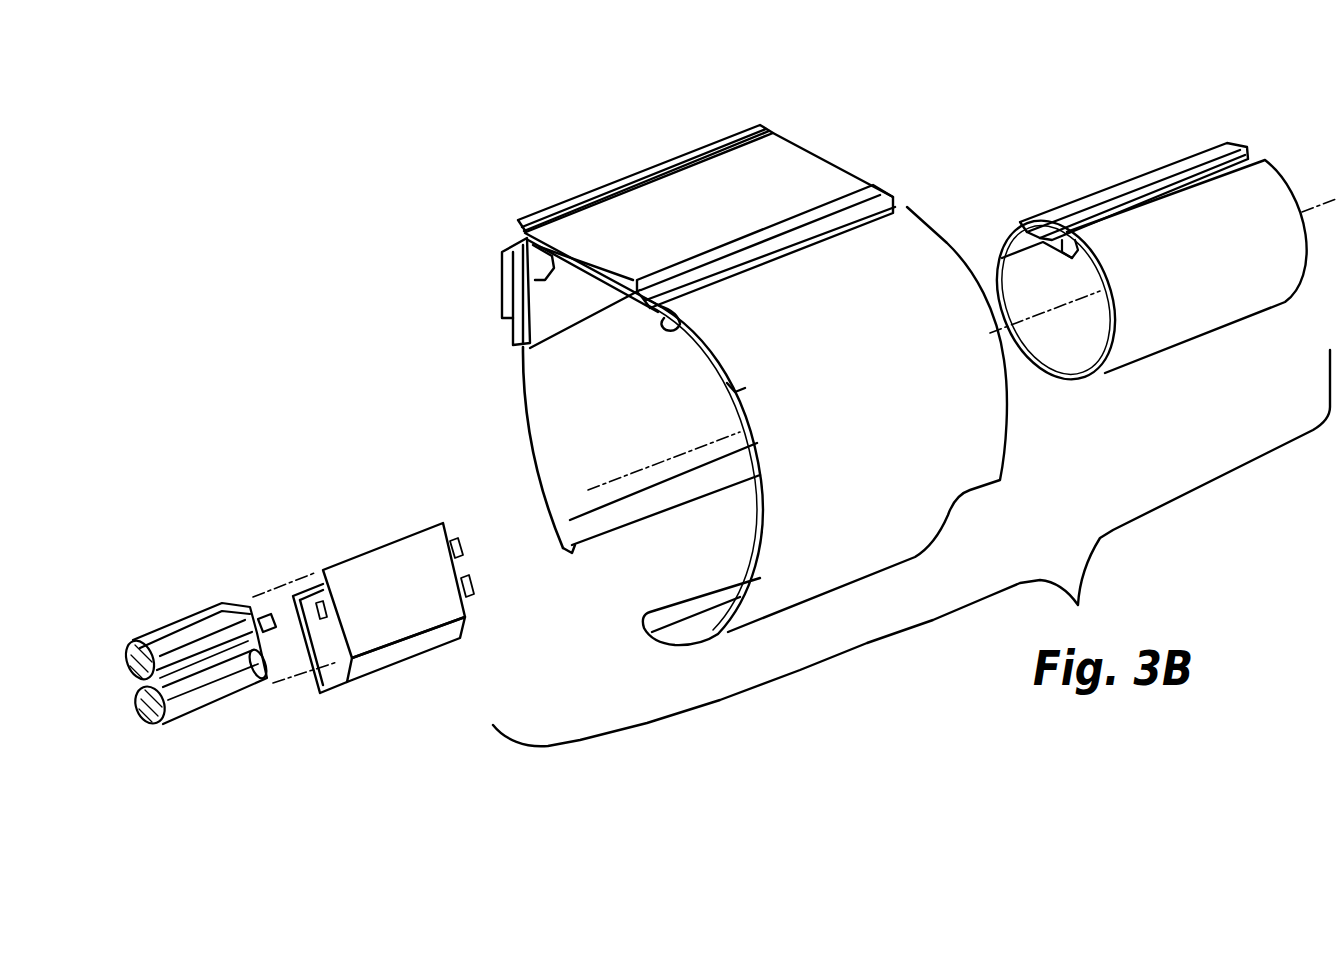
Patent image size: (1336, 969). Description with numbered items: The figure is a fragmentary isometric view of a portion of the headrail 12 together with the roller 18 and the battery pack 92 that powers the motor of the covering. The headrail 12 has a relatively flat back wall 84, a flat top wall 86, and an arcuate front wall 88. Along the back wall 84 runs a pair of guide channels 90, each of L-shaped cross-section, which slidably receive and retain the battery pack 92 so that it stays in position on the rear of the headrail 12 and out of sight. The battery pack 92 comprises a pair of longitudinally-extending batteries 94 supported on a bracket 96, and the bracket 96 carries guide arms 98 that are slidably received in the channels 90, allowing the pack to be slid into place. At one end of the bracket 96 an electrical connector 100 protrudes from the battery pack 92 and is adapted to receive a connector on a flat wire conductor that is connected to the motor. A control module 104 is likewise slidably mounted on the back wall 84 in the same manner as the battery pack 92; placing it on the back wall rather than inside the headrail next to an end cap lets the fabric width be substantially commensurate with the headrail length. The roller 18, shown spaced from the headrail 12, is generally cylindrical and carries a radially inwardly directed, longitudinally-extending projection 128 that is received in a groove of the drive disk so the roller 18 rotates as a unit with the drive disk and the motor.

The headrail 12 is at (855, 136).
The roller 18 is at (1170, 315).
The back wall 84 is at (575, 427).
The top wall 86 is at (677, 243).
The front wall 88 is at (900, 300).
The guide channels 90 is at (525, 440).
The battery pack 92 is at (154, 587).
The batteries 94 is at (148, 700).
The bracket 96 is at (220, 663).
The guide arms 98 is at (218, 618).
The electrical connector 100 is at (278, 612).
The control module 104 is at (365, 662).
The projection 128 is at (1075, 245).